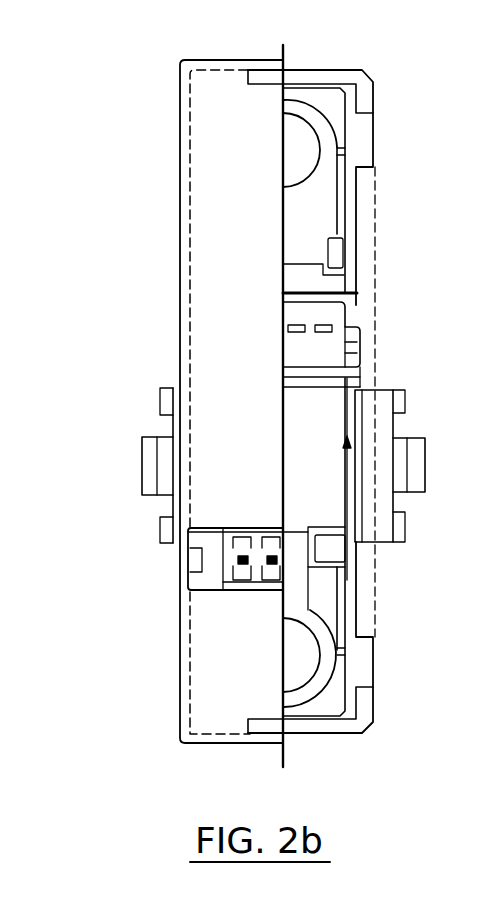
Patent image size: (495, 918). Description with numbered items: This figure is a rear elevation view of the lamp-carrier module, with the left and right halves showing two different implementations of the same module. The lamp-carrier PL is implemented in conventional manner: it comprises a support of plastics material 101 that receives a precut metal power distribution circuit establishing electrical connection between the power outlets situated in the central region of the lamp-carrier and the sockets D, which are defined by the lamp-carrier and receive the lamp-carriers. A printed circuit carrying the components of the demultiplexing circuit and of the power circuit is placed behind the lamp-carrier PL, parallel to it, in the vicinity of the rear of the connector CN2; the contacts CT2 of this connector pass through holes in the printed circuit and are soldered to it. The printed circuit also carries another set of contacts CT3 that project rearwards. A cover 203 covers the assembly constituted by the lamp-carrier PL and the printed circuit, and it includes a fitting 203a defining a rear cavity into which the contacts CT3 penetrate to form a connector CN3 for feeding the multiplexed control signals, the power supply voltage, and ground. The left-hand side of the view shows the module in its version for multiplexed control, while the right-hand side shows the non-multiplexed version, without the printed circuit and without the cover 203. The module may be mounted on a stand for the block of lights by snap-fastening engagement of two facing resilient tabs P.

The sockets D is at (309, 108).
The support of plastics material 101 is at (360, 141).
The cover 203 is at (218, 245).
The fitting 203a is at (219, 591).
The lamp-carrier PL is at (378, 304).
The contacts CT2 is at (326, 323).
The connector CN2 is at (312, 353).
The contacts CT3 is at (272, 566).
The connector CN3 is at (208, 577).
The resilient tabs P is at (150, 470).